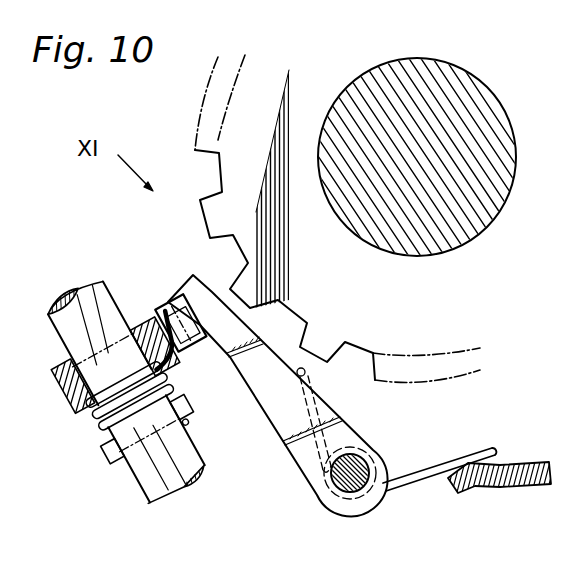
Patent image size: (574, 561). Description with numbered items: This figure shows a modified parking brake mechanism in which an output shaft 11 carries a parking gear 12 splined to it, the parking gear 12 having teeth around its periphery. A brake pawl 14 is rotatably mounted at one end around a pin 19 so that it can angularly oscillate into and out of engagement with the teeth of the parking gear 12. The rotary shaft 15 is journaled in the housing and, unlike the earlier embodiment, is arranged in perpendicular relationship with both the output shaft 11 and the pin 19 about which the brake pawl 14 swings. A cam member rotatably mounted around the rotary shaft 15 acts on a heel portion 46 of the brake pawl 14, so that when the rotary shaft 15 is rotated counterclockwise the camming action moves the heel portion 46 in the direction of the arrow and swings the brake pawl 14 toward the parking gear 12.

The output shaft 11 is at (462, 227).
The parking gear 12 is at (360, 330).
The brake pawl 14 is at (303, 463).
The rotary shaft 15 is at (65, 333).
The pin 19 is at (363, 487).
The heel portion 46 is at (180, 292).